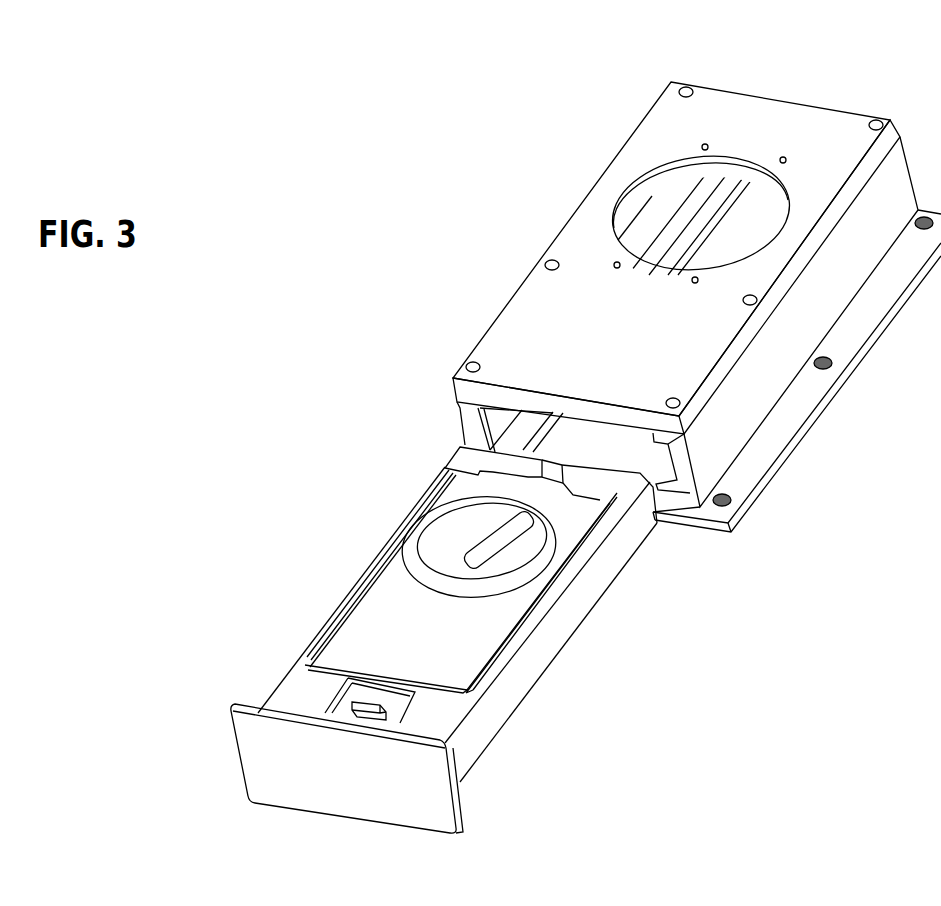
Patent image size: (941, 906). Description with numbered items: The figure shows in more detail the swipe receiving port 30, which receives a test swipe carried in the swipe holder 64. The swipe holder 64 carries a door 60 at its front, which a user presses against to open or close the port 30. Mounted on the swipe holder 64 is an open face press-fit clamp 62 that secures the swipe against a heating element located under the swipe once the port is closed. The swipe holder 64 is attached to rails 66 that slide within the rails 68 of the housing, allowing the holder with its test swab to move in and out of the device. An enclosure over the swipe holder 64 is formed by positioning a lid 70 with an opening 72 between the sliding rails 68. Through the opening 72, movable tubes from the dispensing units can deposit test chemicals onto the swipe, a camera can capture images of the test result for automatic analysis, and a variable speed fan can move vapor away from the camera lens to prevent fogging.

The port 30 is at (453, 198).
The door 60 is at (347, 768).
The open face press-fit clamp 62 is at (461, 584).
The swipe holder 64 is at (457, 614).
The rails 66 is at (577, 587).
The rails 68 is at (699, 334).
The lid 70 is at (676, 258).
The opening 72 is at (730, 203).